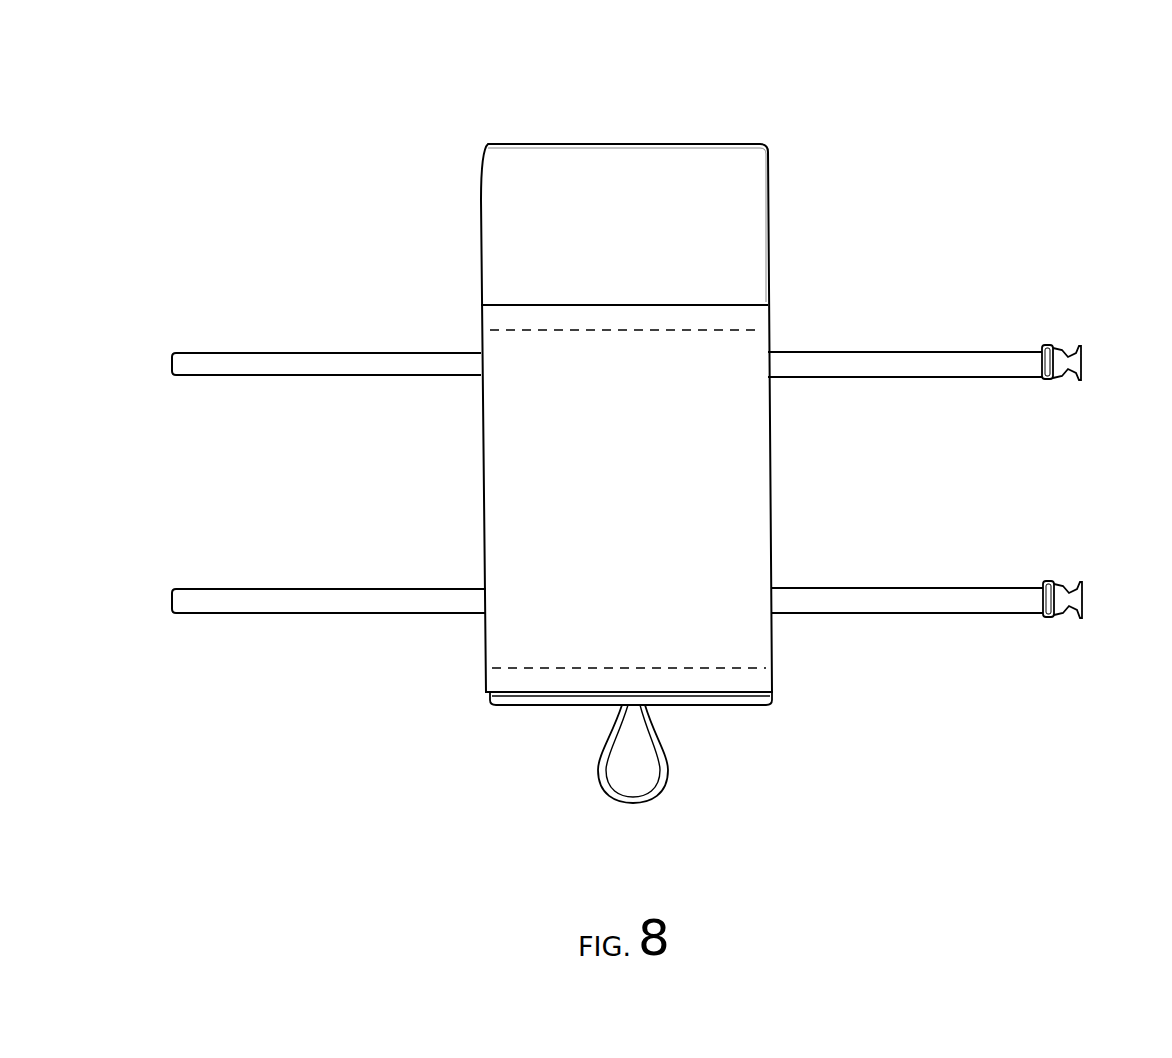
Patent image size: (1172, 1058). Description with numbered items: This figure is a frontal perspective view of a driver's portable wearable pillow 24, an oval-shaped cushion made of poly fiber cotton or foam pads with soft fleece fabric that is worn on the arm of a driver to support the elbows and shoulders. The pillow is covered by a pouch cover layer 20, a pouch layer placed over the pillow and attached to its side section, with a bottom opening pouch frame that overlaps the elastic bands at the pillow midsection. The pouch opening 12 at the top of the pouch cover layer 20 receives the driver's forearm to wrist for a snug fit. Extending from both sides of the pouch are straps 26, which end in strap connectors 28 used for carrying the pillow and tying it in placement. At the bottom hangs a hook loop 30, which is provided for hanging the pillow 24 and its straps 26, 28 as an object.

The pouch opening 12 is at (750, 720).
The pouch cover layer 20 is at (788, 495).
The portable wearable pillow 24 is at (657, 110).
The strap 26 is at (225, 343).
The strap connectors 28 is at (1070, 313).
The hook loop 30 is at (658, 810).